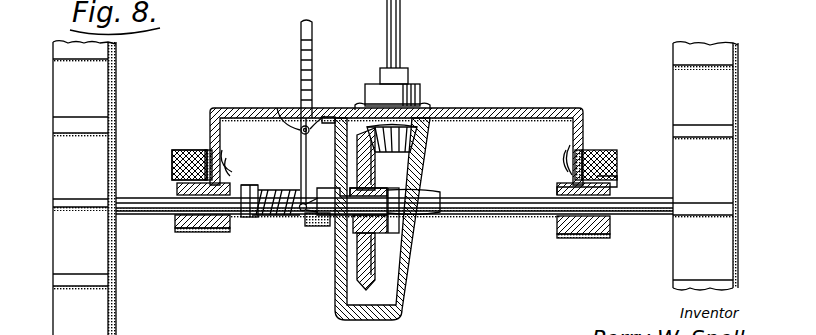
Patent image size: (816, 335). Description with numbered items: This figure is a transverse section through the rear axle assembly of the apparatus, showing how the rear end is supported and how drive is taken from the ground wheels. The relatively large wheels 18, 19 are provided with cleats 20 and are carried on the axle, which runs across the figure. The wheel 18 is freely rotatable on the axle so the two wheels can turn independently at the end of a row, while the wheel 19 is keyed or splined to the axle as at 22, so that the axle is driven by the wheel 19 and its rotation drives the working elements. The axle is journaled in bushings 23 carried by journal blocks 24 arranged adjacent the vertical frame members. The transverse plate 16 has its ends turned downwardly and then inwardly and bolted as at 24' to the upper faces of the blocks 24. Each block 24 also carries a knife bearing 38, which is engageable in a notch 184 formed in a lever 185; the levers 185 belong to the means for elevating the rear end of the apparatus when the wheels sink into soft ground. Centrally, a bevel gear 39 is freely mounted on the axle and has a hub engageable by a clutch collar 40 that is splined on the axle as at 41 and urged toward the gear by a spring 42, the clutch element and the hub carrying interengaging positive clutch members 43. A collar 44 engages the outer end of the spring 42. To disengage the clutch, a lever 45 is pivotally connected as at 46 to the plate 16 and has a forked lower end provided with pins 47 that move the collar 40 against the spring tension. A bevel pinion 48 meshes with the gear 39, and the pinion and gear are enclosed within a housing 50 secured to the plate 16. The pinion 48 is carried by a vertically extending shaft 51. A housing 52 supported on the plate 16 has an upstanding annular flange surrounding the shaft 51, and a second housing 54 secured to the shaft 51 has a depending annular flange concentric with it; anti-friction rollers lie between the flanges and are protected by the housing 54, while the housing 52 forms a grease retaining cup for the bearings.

The plate 16 is at (542, 108).
The wheel 18 is at (100, 88).
The wheel 19 is at (690, 260).
The cleats 20 is at (58, 198).
The key or spline 22 is at (665, 203).
The bushings 23 is at (192, 228).
The journal block 24 is at (401, 244).
The bolt connection 24' is at (421, 133).
The knife bearing 38 is at (175, 170).
The bevel gear 39 is at (362, 283).
The clutch collar 40 is at (314, 227).
The spline 41 is at (272, 190).
The spring 42 is at (252, 185).
The positive clutch members 43 is at (332, 230).
The collar 44 is at (250, 218).
The lever 45 is at (301, 42).
The pivot 46 is at (297, 126).
The pins 47 is at (305, 203).
The bevel pinion 48 is at (415, 146).
The housing 50 is at (406, 290).
The shaft 51 is at (401, 50).
The housing 52 is at (423, 95).
The second housing 54 is at (408, 80).
The notch 184 is at (172, 162).
The lever 185 is at (173, 150).